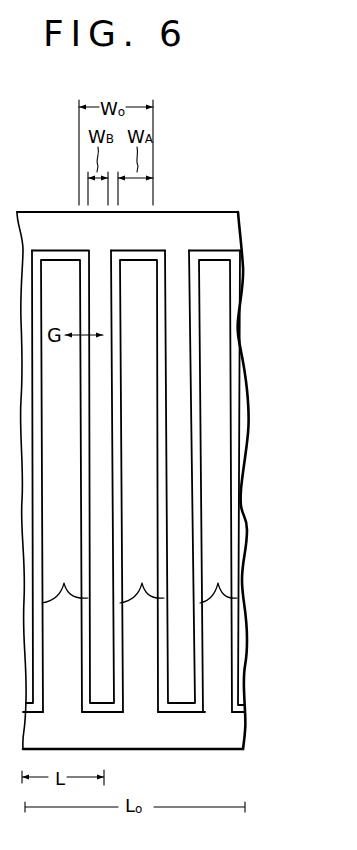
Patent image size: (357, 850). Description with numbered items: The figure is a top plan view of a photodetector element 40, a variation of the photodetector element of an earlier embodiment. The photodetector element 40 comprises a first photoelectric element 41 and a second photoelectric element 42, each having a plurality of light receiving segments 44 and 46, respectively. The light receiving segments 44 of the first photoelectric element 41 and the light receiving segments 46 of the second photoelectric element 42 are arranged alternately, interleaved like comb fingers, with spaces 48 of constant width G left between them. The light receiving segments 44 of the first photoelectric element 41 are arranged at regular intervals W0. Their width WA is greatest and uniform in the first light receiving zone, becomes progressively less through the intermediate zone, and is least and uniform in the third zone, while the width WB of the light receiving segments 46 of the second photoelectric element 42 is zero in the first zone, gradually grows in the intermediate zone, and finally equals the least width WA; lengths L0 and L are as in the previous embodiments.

The photodetector element 40 is at (250, 308).
The first photoelectric element 41 is at (193, 745).
The second photoelectric element 42 is at (214, 226).
The light receiving segments 44 is at (74, 484).
The light receiving segments 46 is at (102, 422).
The spaces 48 is at (139, 581).